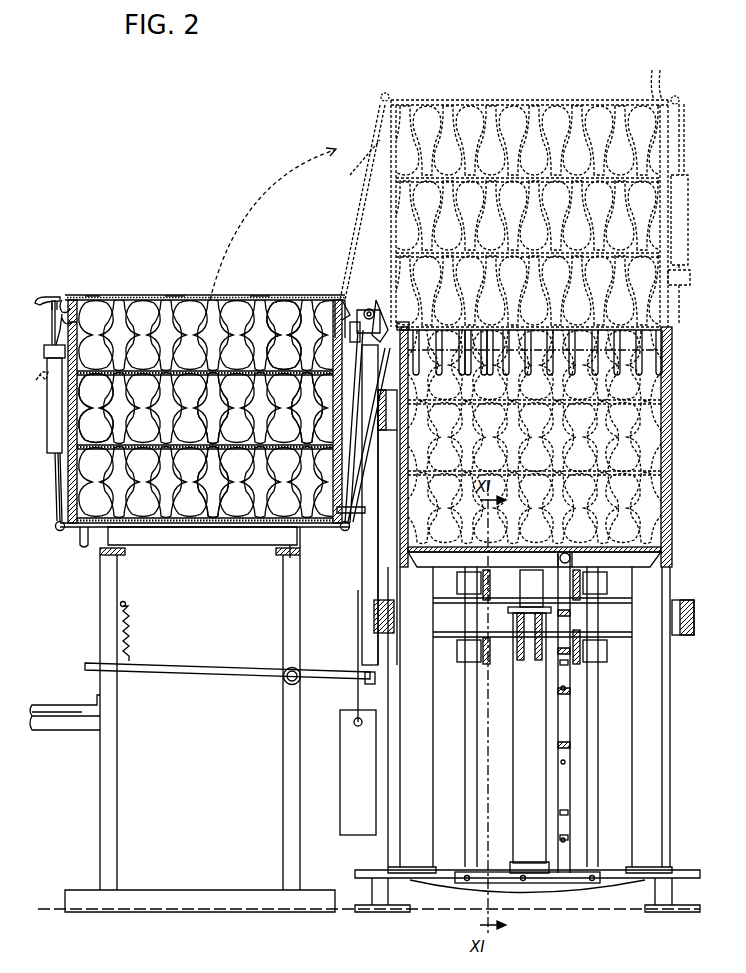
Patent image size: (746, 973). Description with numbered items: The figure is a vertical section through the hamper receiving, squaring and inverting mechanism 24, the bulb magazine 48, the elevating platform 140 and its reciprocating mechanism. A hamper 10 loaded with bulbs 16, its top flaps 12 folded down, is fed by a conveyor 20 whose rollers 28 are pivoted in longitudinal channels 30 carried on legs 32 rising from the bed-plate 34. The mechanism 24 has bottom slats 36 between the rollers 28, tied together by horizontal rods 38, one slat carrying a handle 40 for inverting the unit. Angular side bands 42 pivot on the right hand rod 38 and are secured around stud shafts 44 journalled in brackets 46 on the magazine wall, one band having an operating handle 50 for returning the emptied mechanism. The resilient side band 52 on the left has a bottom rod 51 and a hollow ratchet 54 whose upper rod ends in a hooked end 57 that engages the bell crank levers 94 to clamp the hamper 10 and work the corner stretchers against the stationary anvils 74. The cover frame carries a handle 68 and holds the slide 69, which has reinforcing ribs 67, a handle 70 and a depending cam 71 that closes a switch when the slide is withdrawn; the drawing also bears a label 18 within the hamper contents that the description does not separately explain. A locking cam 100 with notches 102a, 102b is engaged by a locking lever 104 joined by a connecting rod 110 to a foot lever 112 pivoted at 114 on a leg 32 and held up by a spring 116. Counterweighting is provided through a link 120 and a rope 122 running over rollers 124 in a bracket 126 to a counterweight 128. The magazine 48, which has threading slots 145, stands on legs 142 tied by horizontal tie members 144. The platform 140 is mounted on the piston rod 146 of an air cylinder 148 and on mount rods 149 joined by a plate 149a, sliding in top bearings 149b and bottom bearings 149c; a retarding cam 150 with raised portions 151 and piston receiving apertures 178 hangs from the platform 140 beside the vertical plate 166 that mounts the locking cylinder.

The hamper 10 is at (153, 532).
The top flaps 12 is at (325, 352).
The bulbs 16 is at (218, 525).
The spring coil 18 is at (206, 372).
The conveyor 20 is at (235, 556).
The hamper receiving, squaring and inverting mechanism 24 is at (220, 289).
The rollers 28 is at (188, 548).
The longitudinal channels 30 is at (105, 565).
The legs 32 is at (285, 790).
The bed-plate 34 is at (362, 875).
The bottom bands or slats 36 is at (305, 550).
The horizontal rods 38 is at (57, 531).
The handle 40 is at (80, 550).
The angularly extending side bands or slats 42 is at (333, 470).
The stud shafts 44 is at (340, 300).
The brackets 46 is at (410, 380).
The bulb magazine 48 is at (669, 470).
The operating handle 50 is at (337, 505).
The bottom rod 51 is at (60, 517).
The resilient side band 52 is at (56, 483).
The hollow ratchet 54 is at (64, 378).
The hooked upper end 57 is at (78, 322).
The diagonal reinforcing ribs 67 is at (171, 296).
The handle 68 is at (45, 293).
The slide 69 is at (260, 296).
The handle 70 is at (388, 320).
The depending cam 71 is at (95, 298).
The stationary anvil 74 is at (78, 338).
The bell crank lever 94 is at (70, 298).
The locking cam 100 is at (358, 305).
The notch 102a is at (370, 308).
The notch 102b is at (330, 298).
The locking lever 104 is at (350, 325).
The connecting rod 110 is at (370, 572).
The lever 112 is at (222, 665).
The pivot 114 is at (285, 683).
The spring 116 is at (130, 632).
The link 120 is at (409, 326).
The rope 122 is at (365, 655).
The rollers 124 is at (325, 410).
The bracket 126 is at (408, 445).
The counterweight 128 is at (348, 772).
The elevating platform 140 is at (661, 530).
The legs 142 is at (433, 822).
The horizontal tie members 144 is at (394, 633).
The threading slots 145 is at (490, 328).
The piston rod 146 is at (525, 645).
The air cylinder 148 is at (523, 788).
The mount rods 149 is at (465, 760).
The plate 149a is at (577, 895).
The top bearings 149b is at (457, 582).
The bottom bearings 149c is at (457, 645).
The vertical retarding cam 150 is at (566, 727).
The raised portions 151 is at (560, 605).
The vertical plate 166 is at (560, 552).
The piston receiving apertures 178 is at (560, 760).